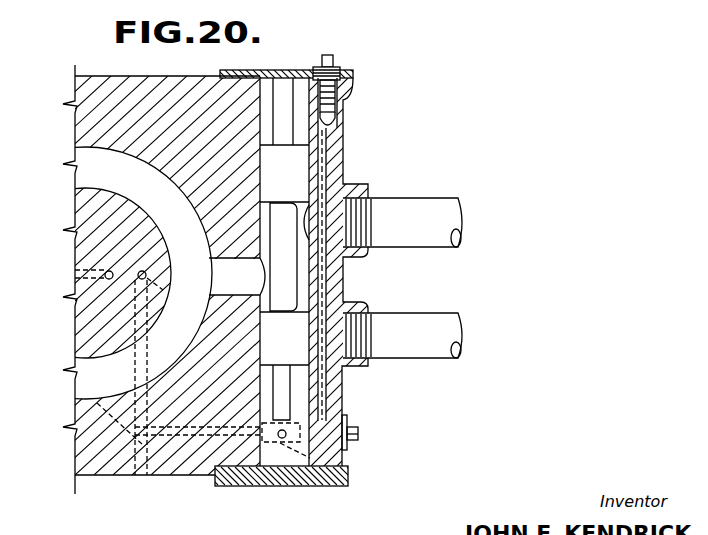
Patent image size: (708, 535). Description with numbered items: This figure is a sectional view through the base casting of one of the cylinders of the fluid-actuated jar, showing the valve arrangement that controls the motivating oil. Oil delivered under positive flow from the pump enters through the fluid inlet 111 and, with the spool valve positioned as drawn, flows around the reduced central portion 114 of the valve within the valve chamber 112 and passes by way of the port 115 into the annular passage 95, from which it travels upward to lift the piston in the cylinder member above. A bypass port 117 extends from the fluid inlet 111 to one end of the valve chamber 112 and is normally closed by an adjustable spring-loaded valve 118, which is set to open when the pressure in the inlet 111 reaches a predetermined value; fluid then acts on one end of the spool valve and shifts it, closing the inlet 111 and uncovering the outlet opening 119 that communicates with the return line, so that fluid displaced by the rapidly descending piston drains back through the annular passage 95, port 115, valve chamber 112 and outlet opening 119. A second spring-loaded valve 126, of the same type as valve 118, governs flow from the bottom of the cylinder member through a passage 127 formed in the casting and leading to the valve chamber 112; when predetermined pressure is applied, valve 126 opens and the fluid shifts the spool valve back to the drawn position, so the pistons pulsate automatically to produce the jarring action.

The annular passage 95 is at (90, 273).
The fluid inlet 111 is at (320, 212).
The valve chamber 112 is at (305, 285).
The reduced central portion 114 is at (285, 293).
The port 115 is at (353, 133).
The bypass port 117 is at (338, 153).
The spring-loaded valve 118 is at (335, 115).
The outlet opening 119 is at (327, 345).
The second spring-loaded valve 126 is at (346, 461).
The passage 127 is at (207, 440).